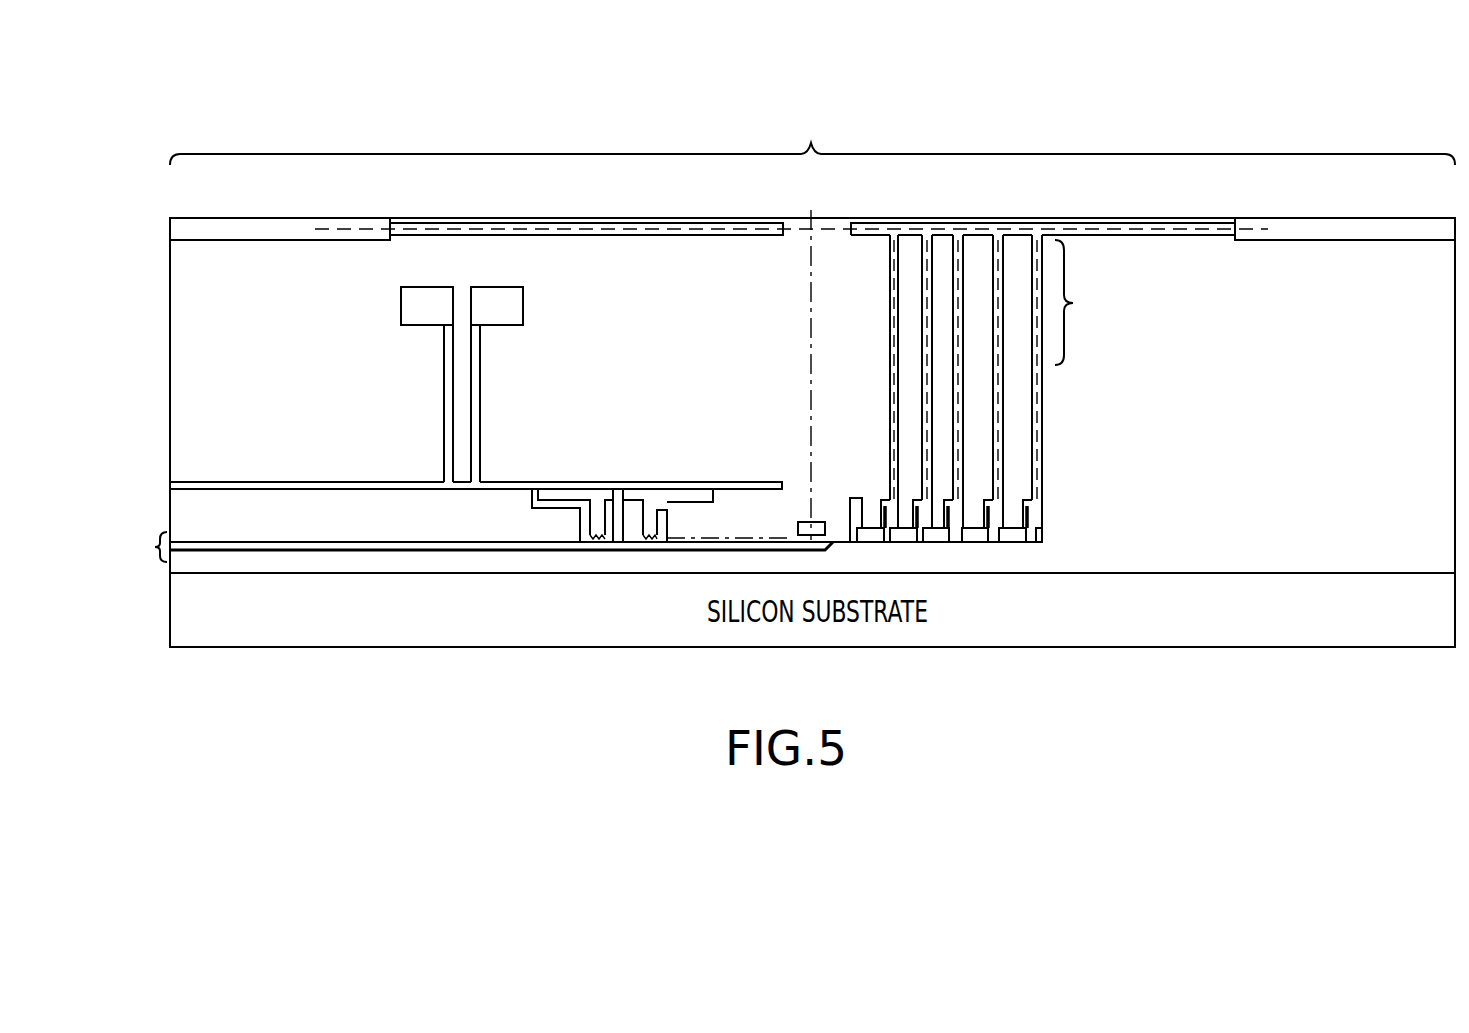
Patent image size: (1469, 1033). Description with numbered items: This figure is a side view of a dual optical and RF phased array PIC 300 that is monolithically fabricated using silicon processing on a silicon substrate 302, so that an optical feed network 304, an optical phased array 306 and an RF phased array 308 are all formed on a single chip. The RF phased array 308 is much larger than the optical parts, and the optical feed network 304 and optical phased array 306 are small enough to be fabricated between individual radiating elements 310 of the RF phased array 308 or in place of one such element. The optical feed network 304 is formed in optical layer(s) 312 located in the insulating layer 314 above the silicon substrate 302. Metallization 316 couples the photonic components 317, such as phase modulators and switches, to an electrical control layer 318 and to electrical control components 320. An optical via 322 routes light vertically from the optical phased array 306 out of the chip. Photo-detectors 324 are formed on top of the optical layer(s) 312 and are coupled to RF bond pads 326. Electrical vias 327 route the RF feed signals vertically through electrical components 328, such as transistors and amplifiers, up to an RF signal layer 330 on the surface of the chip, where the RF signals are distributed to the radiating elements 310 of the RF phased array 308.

The dual optical and RF phased array PIC 300 is at (216, 92).
The silicon substrate 302 is at (168, 648).
The optical feed network 304 is at (436, 526).
The optical phased array 306 is at (798, 527).
The RF phased array 308 is at (812, 136).
The radiating elements 310 is at (208, 230).
The optical layer(s) 312 is at (578, 547).
The insulating layer 314 is at (272, 392).
The metallization 316 is at (580, 518).
The photonic components 317 is at (650, 502).
The electrical control layer 318 is at (362, 480).
The electrical control components 320 is at (525, 304).
The optical via 322 is at (818, 382).
The photo-detectors 324 is at (968, 536).
The RF bond pads 326 is at (1040, 518).
The electrical vias 327 is at (1042, 418).
The electrical components 328 is at (1004, 367).
The RF signal layer 330 is at (673, 236).